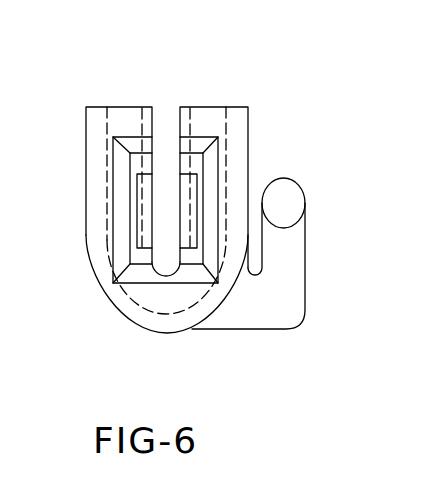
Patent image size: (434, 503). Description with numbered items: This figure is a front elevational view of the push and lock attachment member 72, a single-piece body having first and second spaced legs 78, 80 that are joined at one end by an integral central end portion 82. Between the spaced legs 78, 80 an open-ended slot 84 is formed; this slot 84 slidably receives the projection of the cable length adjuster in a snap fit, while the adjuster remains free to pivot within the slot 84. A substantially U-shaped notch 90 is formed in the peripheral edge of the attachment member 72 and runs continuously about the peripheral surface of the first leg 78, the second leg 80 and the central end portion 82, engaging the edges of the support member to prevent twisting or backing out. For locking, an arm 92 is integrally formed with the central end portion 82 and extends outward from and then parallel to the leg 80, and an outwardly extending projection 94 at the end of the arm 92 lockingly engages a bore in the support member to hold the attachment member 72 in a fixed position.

The push and lock attachment member 72 is at (58, 101).
The first leg 78 is at (118, 112).
The second leg 80 is at (203, 107).
The central end portion 82 is at (142, 297).
The open-ended slot 84 is at (164, 110).
The U-shaped notch 90 is at (105, 170).
The arm 92 is at (287, 310).
The projection 94 is at (288, 198).